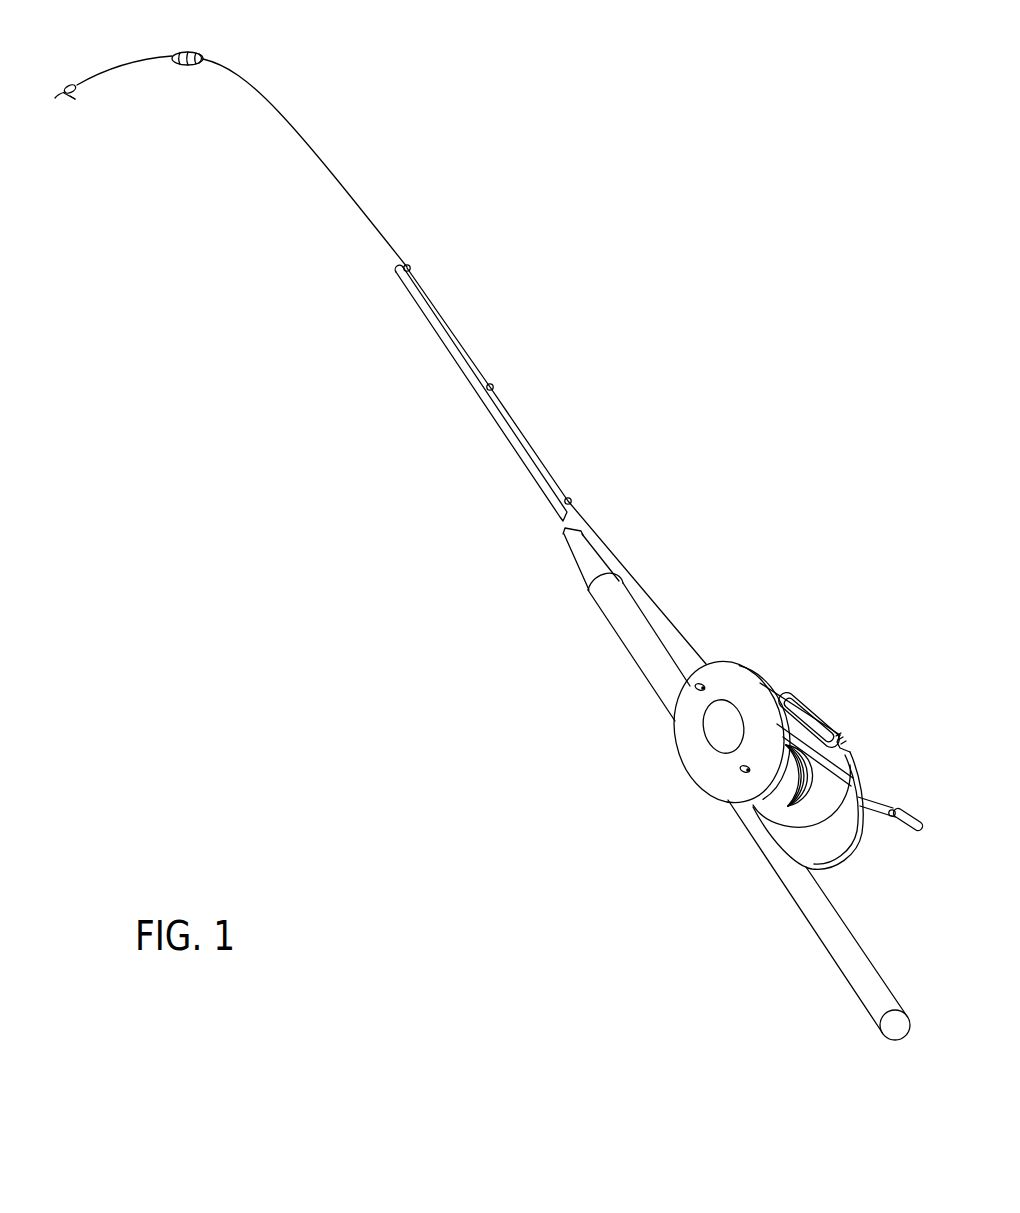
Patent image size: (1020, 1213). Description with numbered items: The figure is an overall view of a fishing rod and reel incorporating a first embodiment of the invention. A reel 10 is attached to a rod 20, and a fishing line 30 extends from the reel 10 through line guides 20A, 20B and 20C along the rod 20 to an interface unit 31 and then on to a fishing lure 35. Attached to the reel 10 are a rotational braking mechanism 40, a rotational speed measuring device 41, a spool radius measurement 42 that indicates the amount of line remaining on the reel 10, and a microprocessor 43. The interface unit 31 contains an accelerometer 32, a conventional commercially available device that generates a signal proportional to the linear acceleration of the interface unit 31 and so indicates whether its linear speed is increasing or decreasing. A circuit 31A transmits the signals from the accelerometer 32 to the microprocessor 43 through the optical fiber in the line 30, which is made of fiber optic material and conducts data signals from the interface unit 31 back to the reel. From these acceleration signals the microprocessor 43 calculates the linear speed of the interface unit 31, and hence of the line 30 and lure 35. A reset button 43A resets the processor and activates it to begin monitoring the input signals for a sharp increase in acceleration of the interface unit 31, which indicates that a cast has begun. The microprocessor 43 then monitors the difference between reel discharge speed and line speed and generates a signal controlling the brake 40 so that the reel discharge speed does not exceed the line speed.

The reel 10 is at (848, 820).
The rod 20 is at (853, 993).
The line guide 20A is at (569, 497).
The line guide 20B is at (491, 383).
The line guide 20C is at (408, 264).
The fishing line 30 is at (314, 152).
The interface unit 31 is at (188, 70).
The circuit 31A is at (204, 55).
The accelerometer 32 is at (185, 51).
The fishing lure 35 is at (55, 98).
The rotational braking mechanism 40 is at (704, 728).
The rotational speed measuring device 41 is at (697, 686).
The spool radius measurement 42 is at (741, 768).
The microprocessor 43 is at (815, 715).
The reset button 43A is at (843, 742).